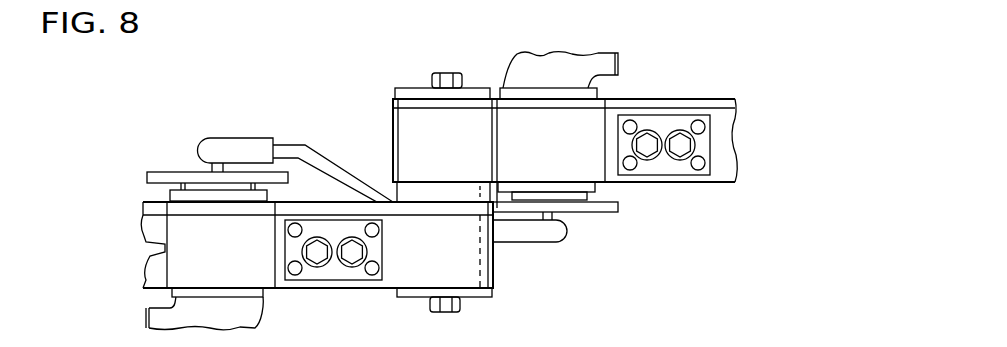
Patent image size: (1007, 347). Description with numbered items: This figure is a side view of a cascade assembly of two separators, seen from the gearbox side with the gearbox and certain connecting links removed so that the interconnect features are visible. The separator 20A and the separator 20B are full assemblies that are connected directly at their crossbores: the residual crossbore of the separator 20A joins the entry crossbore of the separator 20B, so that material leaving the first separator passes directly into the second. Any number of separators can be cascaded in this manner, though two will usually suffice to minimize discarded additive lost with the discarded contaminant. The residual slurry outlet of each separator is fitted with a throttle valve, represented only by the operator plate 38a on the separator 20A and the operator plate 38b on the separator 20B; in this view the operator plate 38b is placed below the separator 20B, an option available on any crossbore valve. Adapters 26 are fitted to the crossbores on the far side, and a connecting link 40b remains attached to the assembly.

The separator 20A is at (515, 270).
The separator 20B is at (752, 140).
The adapter 26 is at (620, 65).
The operator plate 38a is at (140, 170).
The operator plate 38b is at (620, 210).
The connecting link 40b is at (318, 147).